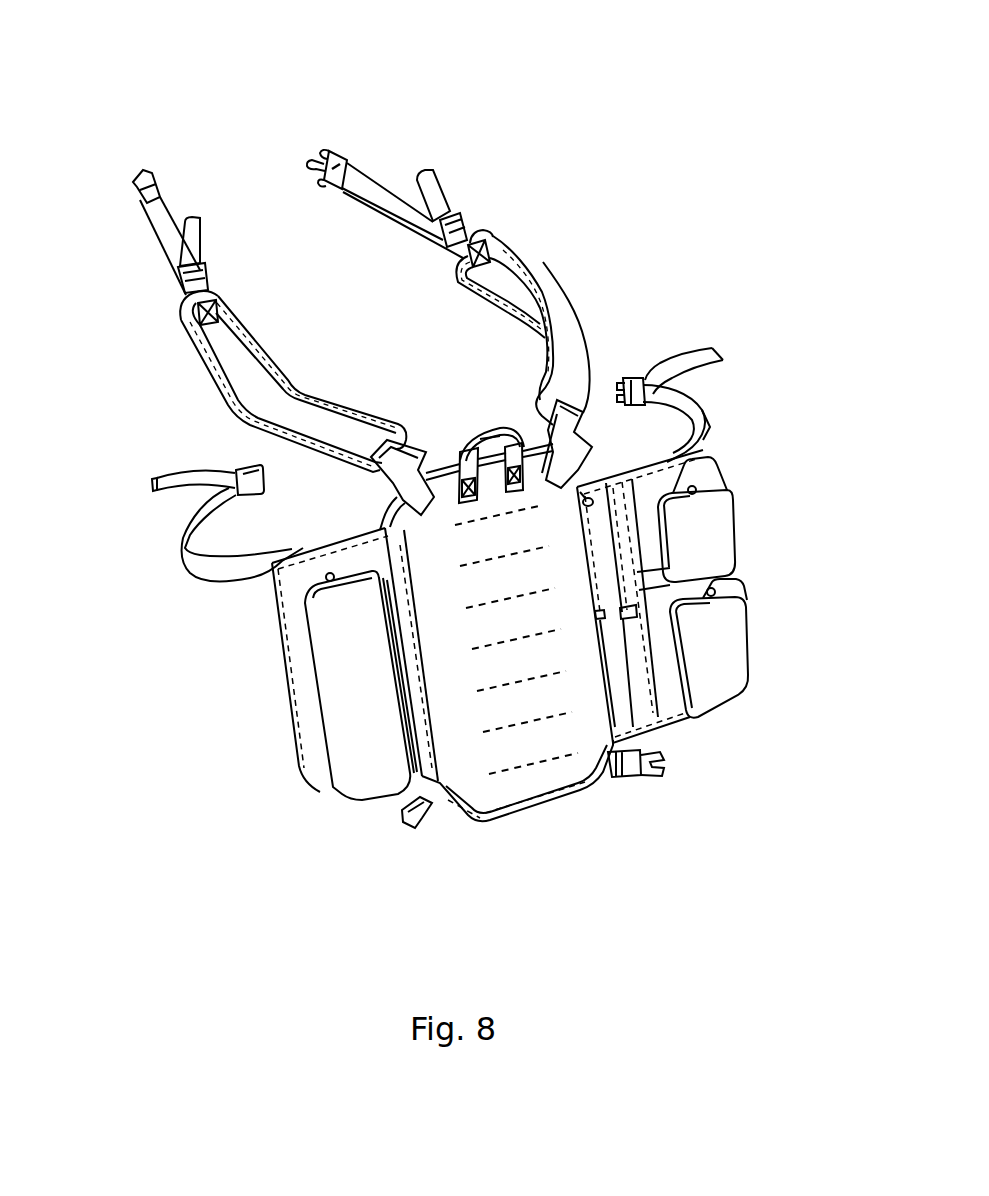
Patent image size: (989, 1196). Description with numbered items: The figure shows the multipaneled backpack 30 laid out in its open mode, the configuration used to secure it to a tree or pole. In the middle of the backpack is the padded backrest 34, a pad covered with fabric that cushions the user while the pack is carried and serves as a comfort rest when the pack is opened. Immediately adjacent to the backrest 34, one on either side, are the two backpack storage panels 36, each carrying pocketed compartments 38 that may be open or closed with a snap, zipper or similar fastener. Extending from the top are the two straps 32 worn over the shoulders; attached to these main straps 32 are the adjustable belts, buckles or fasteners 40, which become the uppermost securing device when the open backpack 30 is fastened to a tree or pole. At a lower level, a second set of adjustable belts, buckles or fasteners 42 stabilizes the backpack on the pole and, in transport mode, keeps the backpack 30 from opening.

The multipaneled backpack 30 is at (206, 98).
The straps 32 is at (267, 378).
The padded backrest 34 is at (542, 733).
The backpack storage panels 36 is at (320, 757).
The pocketed compartments 38 is at (353, 660).
The adjustable belts, buckles or fasteners 40 is at (383, 192).
The second set of adjustable belts, buckles or fasteners 42 is at (685, 397).